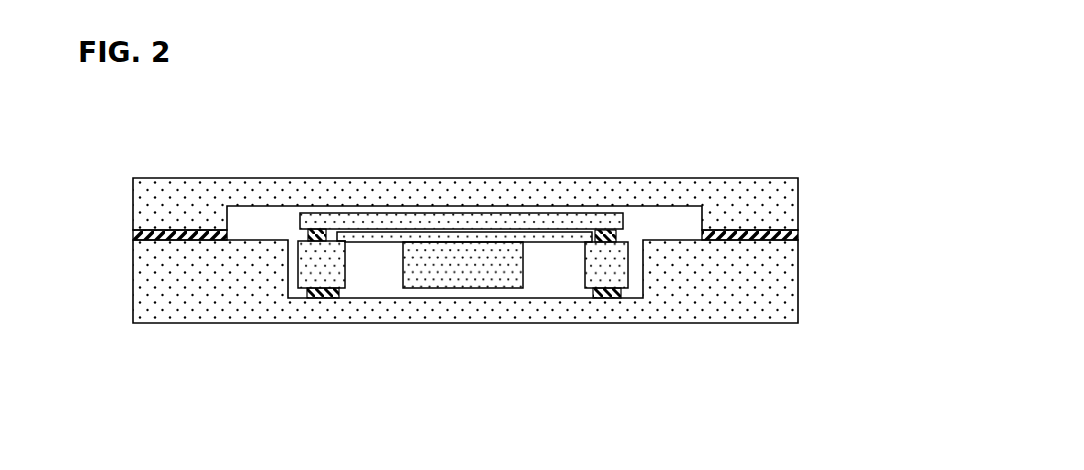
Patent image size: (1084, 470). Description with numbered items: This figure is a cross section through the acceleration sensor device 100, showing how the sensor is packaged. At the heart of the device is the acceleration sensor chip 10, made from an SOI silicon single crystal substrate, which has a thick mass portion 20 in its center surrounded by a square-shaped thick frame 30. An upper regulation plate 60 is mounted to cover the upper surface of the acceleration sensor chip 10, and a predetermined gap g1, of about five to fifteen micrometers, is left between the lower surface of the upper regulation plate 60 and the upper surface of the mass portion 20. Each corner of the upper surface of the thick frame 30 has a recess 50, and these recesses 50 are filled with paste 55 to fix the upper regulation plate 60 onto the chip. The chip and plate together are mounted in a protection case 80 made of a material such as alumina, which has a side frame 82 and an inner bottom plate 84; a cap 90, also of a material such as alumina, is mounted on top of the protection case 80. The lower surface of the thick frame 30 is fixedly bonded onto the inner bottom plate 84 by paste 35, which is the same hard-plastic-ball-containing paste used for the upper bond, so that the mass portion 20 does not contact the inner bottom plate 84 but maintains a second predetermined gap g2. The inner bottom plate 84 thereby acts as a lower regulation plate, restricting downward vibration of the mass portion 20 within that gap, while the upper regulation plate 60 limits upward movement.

The acceleration sensor device 100 is at (530, 293).
The cap 90 is at (798, 200).
The protection case 80 is at (520, 324).
The side frame 82 is at (777, 308).
The inner bottom plate 84 is at (528, 315).
The upper regulation plate 60 is at (430, 222).
The paste 55 is at (320, 233).
The recess 50 is at (498, 269).
The acceleration sensor chip 10 is at (630, 267).
The mass portion 20 is at (465, 280).
The frame 30 is at (312, 268).
The paste 35 is at (338, 297).
The gap g1 is at (483, 230).
The gap g2 is at (457, 295).